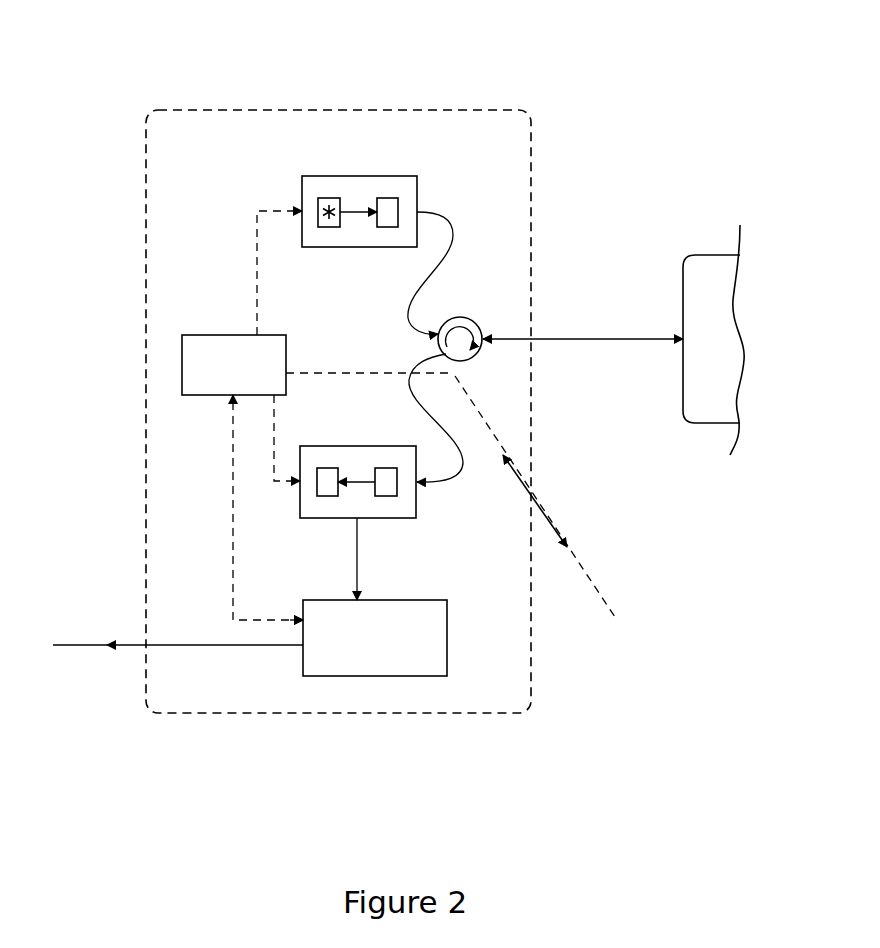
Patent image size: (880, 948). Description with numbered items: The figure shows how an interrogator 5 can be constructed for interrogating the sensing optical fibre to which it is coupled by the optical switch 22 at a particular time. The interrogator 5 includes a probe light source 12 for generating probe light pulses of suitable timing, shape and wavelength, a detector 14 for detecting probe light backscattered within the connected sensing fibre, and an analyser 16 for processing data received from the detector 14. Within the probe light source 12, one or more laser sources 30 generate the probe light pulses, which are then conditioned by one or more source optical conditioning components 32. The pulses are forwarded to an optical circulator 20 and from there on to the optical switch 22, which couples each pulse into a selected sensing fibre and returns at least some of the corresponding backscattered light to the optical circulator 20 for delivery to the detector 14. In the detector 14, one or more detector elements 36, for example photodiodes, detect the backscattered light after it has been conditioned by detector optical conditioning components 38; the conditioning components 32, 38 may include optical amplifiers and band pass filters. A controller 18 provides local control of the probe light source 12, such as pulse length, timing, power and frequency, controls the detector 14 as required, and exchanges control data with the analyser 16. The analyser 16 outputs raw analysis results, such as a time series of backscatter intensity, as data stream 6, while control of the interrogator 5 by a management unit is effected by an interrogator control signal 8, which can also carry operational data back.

The interrogator 5 is at (460, 110).
The data stream 6 is at (80, 645).
The interrogator control signal 8 is at (580, 562).
The probe light source 12 is at (356, 218).
The detector 14 is at (373, 481).
The analyser 16 is at (303, 665).
The controller 18 is at (205, 395).
The optical circulator 20 is at (465, 318).
The optical switch 22 is at (710, 253).
The laser source 30 is at (325, 227).
The source optical conditioning component 32 is at (385, 227).
The detector element 36 is at (320, 497).
The detector optical conditioning component 38 is at (395, 497).